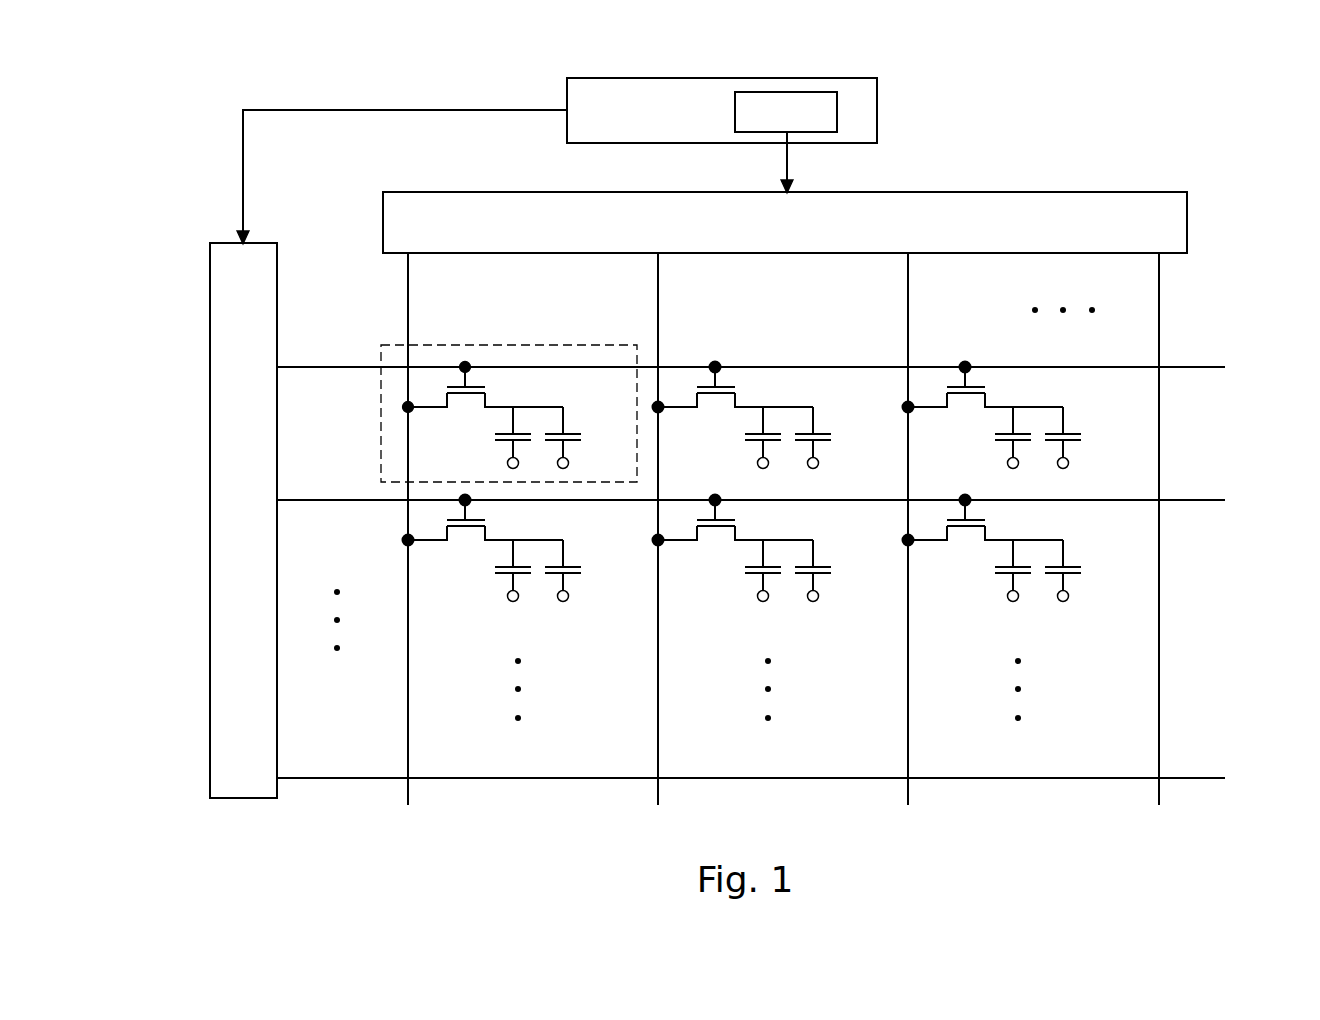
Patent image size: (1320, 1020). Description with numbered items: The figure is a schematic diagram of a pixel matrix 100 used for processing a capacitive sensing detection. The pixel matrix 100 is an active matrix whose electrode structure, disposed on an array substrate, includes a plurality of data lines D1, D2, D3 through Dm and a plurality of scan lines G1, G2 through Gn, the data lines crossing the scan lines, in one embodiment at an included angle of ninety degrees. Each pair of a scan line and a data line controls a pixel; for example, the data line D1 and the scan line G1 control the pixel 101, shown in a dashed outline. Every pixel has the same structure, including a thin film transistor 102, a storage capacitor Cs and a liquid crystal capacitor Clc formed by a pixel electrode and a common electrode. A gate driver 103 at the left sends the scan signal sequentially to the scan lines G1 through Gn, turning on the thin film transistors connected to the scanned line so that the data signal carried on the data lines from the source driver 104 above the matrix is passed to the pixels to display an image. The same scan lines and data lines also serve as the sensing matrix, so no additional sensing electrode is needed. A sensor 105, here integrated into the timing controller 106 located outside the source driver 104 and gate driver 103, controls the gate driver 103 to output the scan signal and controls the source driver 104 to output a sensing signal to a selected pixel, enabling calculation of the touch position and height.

The pixel matrix 100 is at (113, 84).
The pixel 101 is at (473, 382).
The thin film transistor 102 is at (458, 410).
The gate driver 103 is at (210, 355).
The source driver 104 is at (1187, 222).
The sensor 105 is at (837, 110).
The timing controller 106 is at (877, 100).
The data line D1 is at (410, 327).
The data line D2 is at (660, 327).
The data line D3 is at (910, 327).
The data line Dm is at (1161, 327).
The scan line G1 is at (327, 367).
The scan line G2 is at (327, 500).
The scan line Gn is at (327, 778).
The liquid crystal capacitor Clc is at (497, 439).
The storage capacitor Cs is at (581, 438).